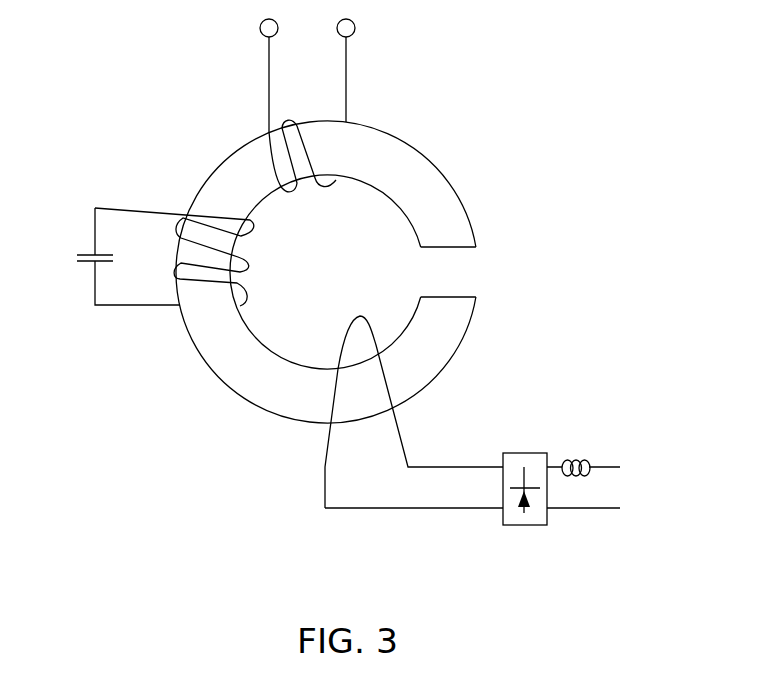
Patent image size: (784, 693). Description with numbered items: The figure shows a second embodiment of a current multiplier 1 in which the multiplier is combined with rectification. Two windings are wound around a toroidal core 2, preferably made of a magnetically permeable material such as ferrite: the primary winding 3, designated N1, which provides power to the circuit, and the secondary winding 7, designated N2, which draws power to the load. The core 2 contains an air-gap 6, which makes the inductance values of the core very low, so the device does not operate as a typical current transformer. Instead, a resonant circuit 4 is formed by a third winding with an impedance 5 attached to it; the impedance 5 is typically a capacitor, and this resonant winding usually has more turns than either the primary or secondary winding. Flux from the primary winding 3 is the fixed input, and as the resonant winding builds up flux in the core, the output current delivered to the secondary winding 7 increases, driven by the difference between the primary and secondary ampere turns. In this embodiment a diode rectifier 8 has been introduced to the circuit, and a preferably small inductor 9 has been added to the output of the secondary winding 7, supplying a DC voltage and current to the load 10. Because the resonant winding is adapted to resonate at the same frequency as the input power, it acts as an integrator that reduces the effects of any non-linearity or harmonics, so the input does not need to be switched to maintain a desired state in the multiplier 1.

The current multiplier 1 is at (138, 79).
The toroidal core 2 is at (415, 188).
The primary winding 3 is at (346, 83).
The resonant circuit 4 is at (148, 275).
The resonant winding impedance 5 is at (82, 254).
The air-gap 6 is at (457, 275).
The secondary winding 7 is at (363, 443).
The diode rectifier 8 is at (536, 465).
The inductor 9 is at (571, 462).
The load 10 is at (605, 488).